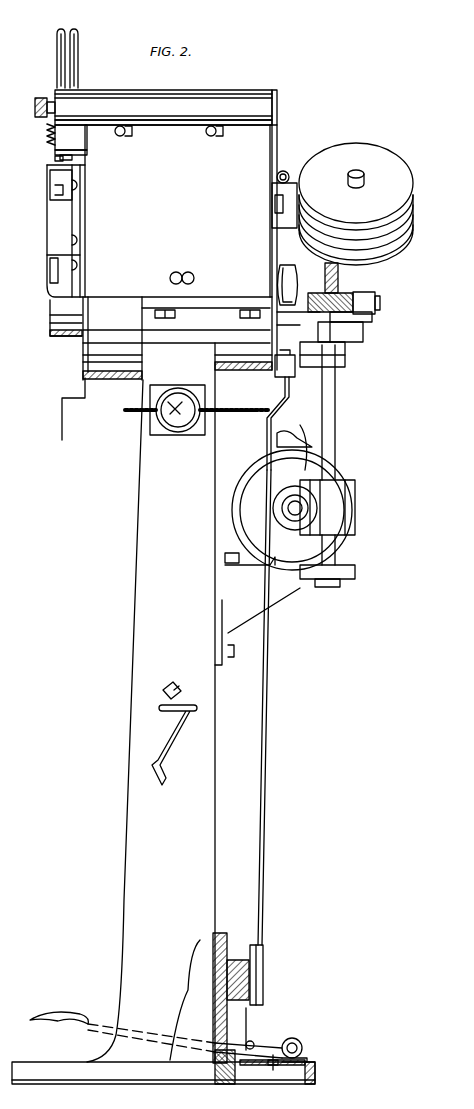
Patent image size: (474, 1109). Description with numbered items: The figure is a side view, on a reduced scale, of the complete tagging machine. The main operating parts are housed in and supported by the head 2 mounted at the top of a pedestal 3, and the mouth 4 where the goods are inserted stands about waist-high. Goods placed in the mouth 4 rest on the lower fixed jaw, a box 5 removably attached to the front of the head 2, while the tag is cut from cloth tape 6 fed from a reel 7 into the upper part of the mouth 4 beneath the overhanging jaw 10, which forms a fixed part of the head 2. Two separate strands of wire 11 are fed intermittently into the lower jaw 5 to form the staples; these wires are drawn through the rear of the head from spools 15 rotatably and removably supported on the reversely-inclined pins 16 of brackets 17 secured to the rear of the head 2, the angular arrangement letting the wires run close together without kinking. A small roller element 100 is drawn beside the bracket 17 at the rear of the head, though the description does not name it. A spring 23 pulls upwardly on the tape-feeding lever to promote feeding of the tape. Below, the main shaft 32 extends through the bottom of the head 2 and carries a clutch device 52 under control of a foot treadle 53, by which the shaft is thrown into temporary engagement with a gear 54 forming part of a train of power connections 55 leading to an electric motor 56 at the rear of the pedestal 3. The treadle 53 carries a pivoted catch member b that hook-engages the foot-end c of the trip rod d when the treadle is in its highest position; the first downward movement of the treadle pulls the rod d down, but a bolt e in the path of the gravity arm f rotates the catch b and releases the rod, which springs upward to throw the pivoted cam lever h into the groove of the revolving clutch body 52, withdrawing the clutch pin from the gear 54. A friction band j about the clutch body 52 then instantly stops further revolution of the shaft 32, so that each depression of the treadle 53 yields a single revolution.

The head 2 is at (181, 247).
The pedestal 3 is at (77, 29).
The mouth 4 is at (55, 156).
The box 5 is at (47, 206).
The cloth tape 6 is at (86, 152).
The reel 7 is at (78, 48).
The overhanging jaw 10 is at (71, 137).
The wire 11 is at (370, 248).
The spool 15 is at (345, 146).
The reversely-inclined pin 16 is at (365, 176).
The bracket 17 is at (272, 221).
The spring 23 is at (46, 128).
The main shaft 32 is at (380, 302).
The clutch device 52 is at (340, 352).
The foot treadle 53 is at (48, 1015).
The gear 54 is at (345, 277).
The power connections 55 is at (365, 320).
The electric motor 56 is at (330, 482).
The roller 100 is at (286, 170).
The catch member b is at (264, 1010).
The foot-end of trip rod c is at (255, 1012).
The trip rod d is at (262, 930).
The bolt e is at (303, 1048).
The gravity arm f is at (280, 1040).
The cam lever h is at (289, 410).
The friction band j is at (279, 282).